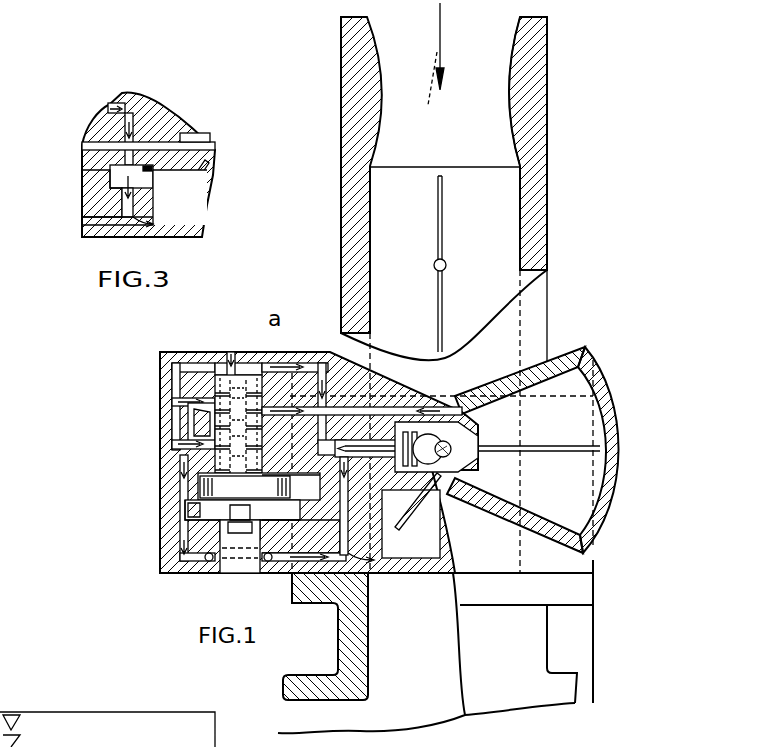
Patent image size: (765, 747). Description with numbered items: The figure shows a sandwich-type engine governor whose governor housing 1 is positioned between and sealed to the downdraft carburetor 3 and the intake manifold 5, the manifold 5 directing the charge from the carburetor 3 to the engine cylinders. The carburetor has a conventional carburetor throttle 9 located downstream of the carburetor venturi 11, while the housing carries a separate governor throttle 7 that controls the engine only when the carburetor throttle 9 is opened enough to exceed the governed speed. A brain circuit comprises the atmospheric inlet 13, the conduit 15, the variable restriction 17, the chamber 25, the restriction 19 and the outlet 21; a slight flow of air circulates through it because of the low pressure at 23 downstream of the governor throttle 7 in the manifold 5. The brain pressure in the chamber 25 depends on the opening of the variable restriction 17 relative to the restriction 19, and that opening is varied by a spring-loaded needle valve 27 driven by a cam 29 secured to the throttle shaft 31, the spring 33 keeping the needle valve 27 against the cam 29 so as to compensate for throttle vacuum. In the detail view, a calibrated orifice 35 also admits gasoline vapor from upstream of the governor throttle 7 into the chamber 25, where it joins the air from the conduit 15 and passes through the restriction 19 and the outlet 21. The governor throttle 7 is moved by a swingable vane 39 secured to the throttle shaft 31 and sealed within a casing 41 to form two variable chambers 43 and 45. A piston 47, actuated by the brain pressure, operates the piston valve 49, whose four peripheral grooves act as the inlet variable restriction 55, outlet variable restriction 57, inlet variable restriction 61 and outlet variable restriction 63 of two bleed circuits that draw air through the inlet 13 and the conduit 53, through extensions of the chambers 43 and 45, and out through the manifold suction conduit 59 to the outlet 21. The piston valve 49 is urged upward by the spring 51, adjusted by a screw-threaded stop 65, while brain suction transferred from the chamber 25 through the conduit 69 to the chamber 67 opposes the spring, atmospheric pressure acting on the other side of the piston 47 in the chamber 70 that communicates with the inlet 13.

In FIG. 1, the governor housing 1 is at (593, 561).
In FIG. 1, the downdraft carburetor 3 is at (548, 136).
In FIG. 1, the intake manifold 5 is at (553, 688).
In FIG. 3, the governor throttle 7 is at (190, 183).
In FIG. 1, the governor throttle 7 is at (402, 520).
In FIG. 1, the carburetor throttle 9 is at (443, 210).
In FIG. 1, the carburetor venturi 11 is at (503, 98).
In FIG. 1, the atmospheric inlet 13 is at (228, 351).
In FIG. 3, the conduit 15 is at (108, 103).
In FIG. 1, the conduit 15 is at (268, 363).
In FIG. 3, the variable restriction 17 is at (133, 97).
In FIG. 1, the variable restriction 17 is at (326, 440).
In FIG. 3, the restriction 19 is at (125, 202).
In FIG. 1, the restriction 19 is at (340, 546).
In FIG. 3, the outlet 21 is at (152, 223).
In FIG. 1, the outlet 21 is at (374, 558).
In FIG. 1, the low pressure region 23 is at (378, 657).
In FIG. 3, the chamber 25 is at (115, 165).
In FIG. 1, the chamber 25 is at (350, 493).
In FIG. 3, the needle valve 27 is at (135, 113).
In FIG. 1, the needle valve 27 is at (352, 455).
In FIG. 1, the cam 29 is at (430, 457).
In FIG. 1, the throttle shaft 31 is at (428, 425).
In FIG. 1, the spring 33 is at (400, 430).
In FIG. 3, the calibrated orifice 35 is at (152, 167).
In FIG. 1, the swingable vane 39 is at (598, 449).
In FIG. 1, the casing 41 is at (588, 352).
In FIG. 1, the variable chamber 43 is at (572, 418).
In FIG. 3, the variable chamber 45 is at (197, 138).
In FIG. 1, the variable chamber 45 is at (582, 483).
In FIG. 1, the piston 47 is at (210, 488).
In FIG. 1, the piston valve 49 is at (215, 420).
In FIG. 1, the spring 51 is at (230, 510).
In FIG. 1, the conduit 53 is at (183, 363).
In FIG. 1, the inlet variable restriction 55 is at (230, 385).
In FIG. 1, the outlet variable restriction 57 is at (222, 403).
In FIG. 1, the manifold suction conduit 59 is at (187, 530).
In FIG. 1, the inlet variable restriction 61 is at (203, 470).
In FIG. 1, the outlet variable restriction 63 is at (212, 440).
In FIG. 1, the screw-threaded stop 65 is at (230, 535).
In FIG. 1, the chamber 67 is at (205, 508).
In FIG. 3, the conduit 69 is at (88, 175).
In FIG. 1, the conduit 69 is at (308, 505).
In FIG. 1, the chamber 70 is at (242, 380).